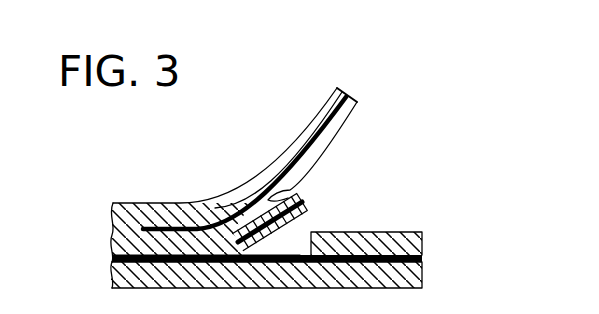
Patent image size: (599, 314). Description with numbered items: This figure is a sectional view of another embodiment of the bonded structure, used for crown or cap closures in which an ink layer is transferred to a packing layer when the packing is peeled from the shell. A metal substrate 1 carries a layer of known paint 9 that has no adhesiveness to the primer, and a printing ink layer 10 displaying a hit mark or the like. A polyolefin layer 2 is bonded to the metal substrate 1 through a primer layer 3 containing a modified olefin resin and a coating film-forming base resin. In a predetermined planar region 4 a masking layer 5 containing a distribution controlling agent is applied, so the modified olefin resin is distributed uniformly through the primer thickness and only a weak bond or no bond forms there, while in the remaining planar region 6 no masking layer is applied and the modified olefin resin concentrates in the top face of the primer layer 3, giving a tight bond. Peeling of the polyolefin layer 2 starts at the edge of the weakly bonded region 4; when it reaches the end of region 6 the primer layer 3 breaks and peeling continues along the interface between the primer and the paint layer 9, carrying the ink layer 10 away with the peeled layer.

The metal substrate 1 is at (422, 275).
The polyolefin layer 2 is at (342, 124).
The primer layer 3 is at (422, 240).
The masking layer-applied planar region 4 is at (419, 216).
The masking layer 5 is at (422, 258).
The remaining planar region 6 is at (256, 150).
The paint layer 9 is at (112, 259).
The printing ink layer 10 is at (143, 229).